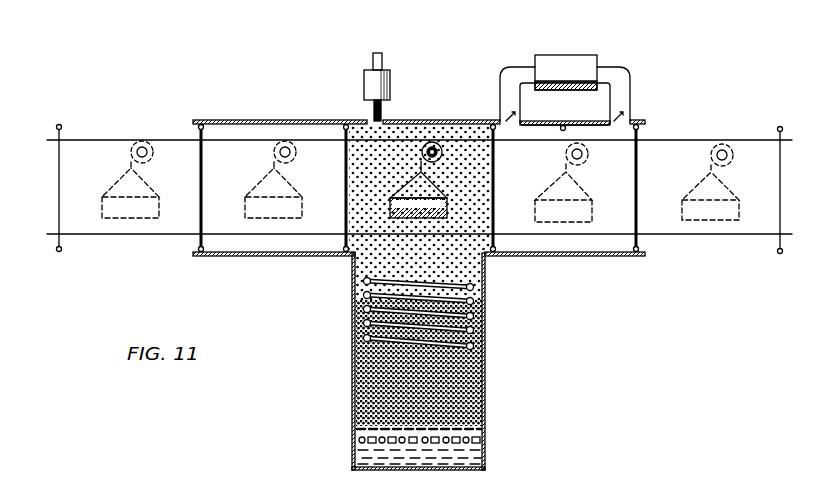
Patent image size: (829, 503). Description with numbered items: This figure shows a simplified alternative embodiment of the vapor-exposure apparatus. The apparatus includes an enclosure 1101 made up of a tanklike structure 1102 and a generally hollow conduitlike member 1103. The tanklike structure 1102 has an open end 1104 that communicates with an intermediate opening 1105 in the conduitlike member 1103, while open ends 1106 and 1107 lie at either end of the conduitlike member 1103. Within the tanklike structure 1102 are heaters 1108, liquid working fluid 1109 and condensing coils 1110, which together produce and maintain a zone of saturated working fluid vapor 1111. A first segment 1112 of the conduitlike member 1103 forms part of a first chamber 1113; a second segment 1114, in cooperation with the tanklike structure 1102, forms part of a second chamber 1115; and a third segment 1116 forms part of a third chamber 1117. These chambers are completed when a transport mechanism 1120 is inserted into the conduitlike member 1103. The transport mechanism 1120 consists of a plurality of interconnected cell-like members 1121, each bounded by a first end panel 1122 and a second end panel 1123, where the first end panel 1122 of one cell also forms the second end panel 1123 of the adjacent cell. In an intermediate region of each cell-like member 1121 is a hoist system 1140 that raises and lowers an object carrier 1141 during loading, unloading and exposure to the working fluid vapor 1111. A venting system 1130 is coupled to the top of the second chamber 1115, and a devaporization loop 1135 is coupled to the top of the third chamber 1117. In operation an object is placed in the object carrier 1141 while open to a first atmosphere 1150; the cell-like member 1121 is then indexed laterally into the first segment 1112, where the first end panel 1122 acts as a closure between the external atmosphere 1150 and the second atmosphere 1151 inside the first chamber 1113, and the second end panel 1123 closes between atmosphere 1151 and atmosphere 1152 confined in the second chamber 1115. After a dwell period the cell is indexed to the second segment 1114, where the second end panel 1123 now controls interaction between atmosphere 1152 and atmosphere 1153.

The enclosure 1101 is at (487, 308).
The tanklike structure 1102 is at (487, 440).
The conduitlike member 1103 is at (646, 124).
The open end 1104 is at (435, 256).
The intermediate opening 1105 is at (338, 262).
The open end 1106 is at (190, 250).
The open end 1107 is at (650, 243).
The heaters 1108 is at (355, 430).
The liquid working fluid 1109 is at (355, 452).
The condensing coils 1110 is at (474, 345).
The zone of saturated working fluid vapor 1111 is at (365, 377).
The first segment 1112 is at (316, 119).
The first chamber 1113 is at (263, 131).
The second segment 1114 is at (424, 120).
The second chamber 1115 is at (492, 121).
The third segment 1116 is at (585, 124).
The third chamber 1117 is at (625, 131).
The transport mechanism 1120 is at (109, 272).
The cell-like members 1121 is at (95, 153).
The first end panel 1122 is at (203, 170).
The second end panel 1123 is at (196, 126).
The venting system 1130 is at (366, 80).
The devaporization loop 1135 is at (576, 62).
The hoist system 1140 is at (433, 142).
The object carrier 1141 is at (128, 212).
The first atmosphere 1150 is at (126, 116).
The second atmosphere 1151 is at (246, 152).
The atmosphere 1152 is at (460, 136).
The atmosphere 1153 is at (520, 218).